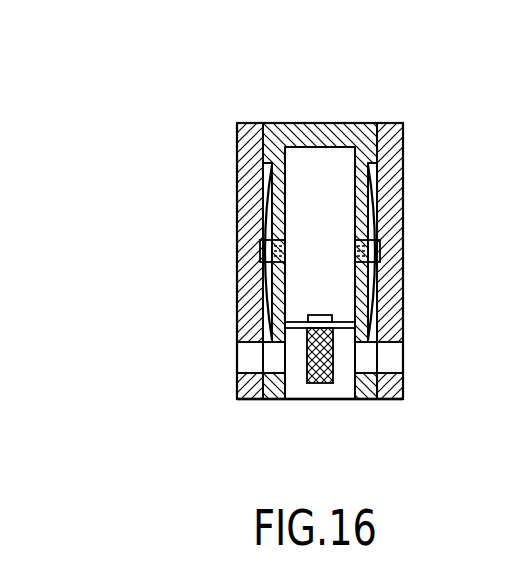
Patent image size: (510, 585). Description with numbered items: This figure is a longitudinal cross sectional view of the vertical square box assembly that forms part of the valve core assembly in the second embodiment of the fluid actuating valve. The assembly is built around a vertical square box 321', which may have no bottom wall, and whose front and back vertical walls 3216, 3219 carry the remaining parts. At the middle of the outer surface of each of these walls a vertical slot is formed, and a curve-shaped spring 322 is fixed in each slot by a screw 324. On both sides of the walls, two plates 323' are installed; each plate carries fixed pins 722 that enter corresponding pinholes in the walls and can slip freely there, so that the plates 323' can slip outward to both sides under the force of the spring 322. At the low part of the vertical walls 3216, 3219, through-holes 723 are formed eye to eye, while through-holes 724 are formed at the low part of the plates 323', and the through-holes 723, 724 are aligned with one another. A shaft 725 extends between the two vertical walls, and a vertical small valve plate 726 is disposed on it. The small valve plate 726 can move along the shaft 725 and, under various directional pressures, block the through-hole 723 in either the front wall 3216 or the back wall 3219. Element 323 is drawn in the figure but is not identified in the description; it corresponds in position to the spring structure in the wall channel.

The pin 722 is at (253, 123).
The vertical square box 321' is at (320, 184).
The leaf spring contact 323 is at (200, 243).
The plate 323' is at (433, 196).
The back vertical wall 3219 is at (362, 212).
The screw 324 is at (262, 250).
The front vertical wall 3216 is at (262, 288).
The curve-shaped spring 322 is at (237, 337).
The shaft 725 is at (355, 315).
The vertical small valve plate 726 is at (335, 353).
The through-hole 724 is at (270, 366).
The through-hole 723 is at (355, 400).